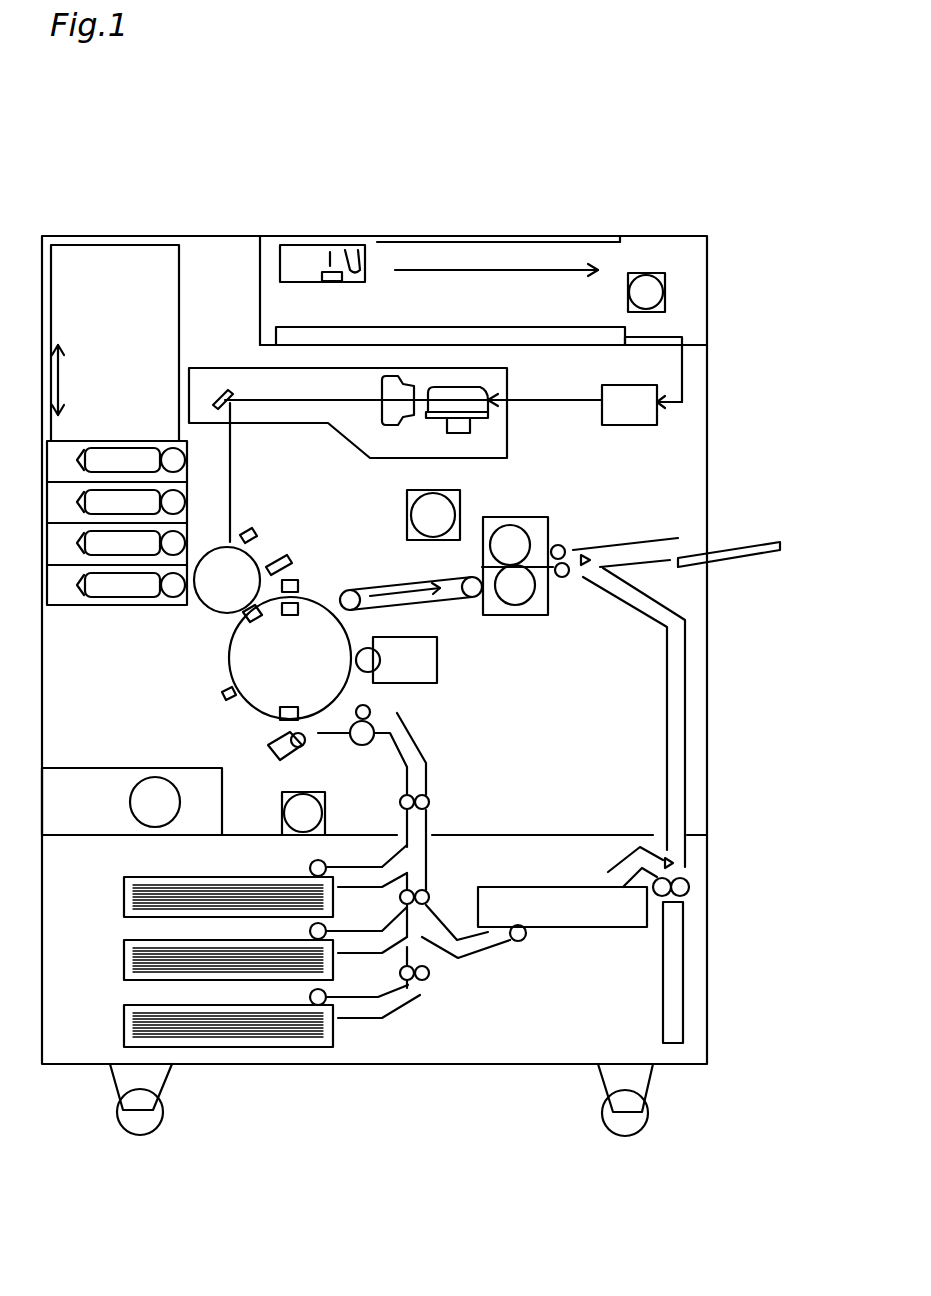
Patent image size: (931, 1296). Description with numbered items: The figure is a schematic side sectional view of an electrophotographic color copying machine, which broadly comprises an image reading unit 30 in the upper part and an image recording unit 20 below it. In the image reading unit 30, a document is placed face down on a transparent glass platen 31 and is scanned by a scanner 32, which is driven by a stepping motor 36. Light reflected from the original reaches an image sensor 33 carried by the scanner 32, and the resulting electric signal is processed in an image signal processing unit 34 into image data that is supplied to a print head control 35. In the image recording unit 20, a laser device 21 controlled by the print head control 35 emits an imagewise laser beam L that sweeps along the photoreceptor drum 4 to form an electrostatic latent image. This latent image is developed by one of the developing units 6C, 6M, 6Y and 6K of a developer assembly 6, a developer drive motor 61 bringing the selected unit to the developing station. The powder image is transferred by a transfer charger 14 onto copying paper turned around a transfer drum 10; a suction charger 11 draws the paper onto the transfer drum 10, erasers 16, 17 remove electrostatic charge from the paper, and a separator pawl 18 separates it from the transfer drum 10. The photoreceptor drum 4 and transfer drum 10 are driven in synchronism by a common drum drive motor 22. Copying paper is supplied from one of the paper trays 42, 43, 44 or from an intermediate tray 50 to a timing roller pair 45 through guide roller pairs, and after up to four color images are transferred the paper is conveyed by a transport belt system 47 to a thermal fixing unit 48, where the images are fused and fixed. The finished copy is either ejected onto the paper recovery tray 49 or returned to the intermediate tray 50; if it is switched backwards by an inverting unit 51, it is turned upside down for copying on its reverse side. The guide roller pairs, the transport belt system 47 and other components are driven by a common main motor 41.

The photoreceptor drum 4 is at (210, 612).
The developer assembly 6 is at (131, 440).
The developing unit for cyan toner 6C is at (75, 460).
The developing unit for magenta toner 6M is at (75, 500).
The developing unit for yellow toner 6Y is at (72, 540).
The developing unit for black toner 6K is at (147, 600).
The transfer drum 10 is at (347, 687).
The suction charger 11 is at (270, 715).
The transfer charger 14 is at (286, 658).
The eraser 16 is at (288, 615).
The eraser 17 is at (290, 567).
The separator pawl 18 is at (335, 587).
The image recording unit 20 is at (150, 738).
The laser device 21 is at (228, 368).
The drum drive motor 22 is at (460, 500).
The image reading unit 30 is at (474, 313).
The glass platen 31 is at (495, 236).
The scanner 32 is at (293, 248).
The image sensor 33 is at (333, 282).
The image signal processing unit 34 is at (510, 325).
The print head control 35 is at (632, 425).
The stepping motor 36 is at (665, 293).
The main motor 41 is at (323, 802).
The paper tray 42 is at (124, 906).
The paper tray 43 is at (124, 966).
The paper tray 44 is at (124, 1027).
The timing roller pair 45 is at (377, 712).
The transport belt system 47 is at (420, 605).
The thermal fixing unit 48 is at (548, 498).
The paper recovery tray 49 is at (716, 548).
The intermediate tray 50 is at (520, 942).
The inverting unit 51 is at (663, 985).
The developer drive motor 61 is at (130, 802).
The imagewise laser beam L is at (233, 460).